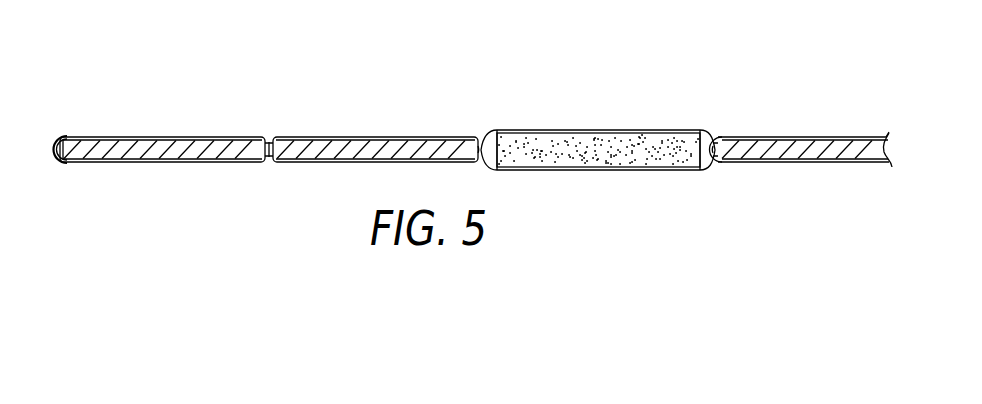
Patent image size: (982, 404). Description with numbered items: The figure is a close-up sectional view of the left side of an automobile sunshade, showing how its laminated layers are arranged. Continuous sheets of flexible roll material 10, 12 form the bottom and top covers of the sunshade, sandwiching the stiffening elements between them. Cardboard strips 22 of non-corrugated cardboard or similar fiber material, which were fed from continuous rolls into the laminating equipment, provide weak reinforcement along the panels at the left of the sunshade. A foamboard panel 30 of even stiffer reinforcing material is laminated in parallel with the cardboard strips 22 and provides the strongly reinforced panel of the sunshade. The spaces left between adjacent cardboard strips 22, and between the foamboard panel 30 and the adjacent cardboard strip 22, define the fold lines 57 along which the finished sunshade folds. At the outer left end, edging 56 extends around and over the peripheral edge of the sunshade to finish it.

The continuous sheet of flexible roll material 10 is at (456, 128).
The continuous sheet of flexible roll material 12 is at (437, 137).
The cardboard strip 22 is at (269, 96).
The foamboard panel 30 is at (627, 137).
The edging 56 is at (52, 147).
The fold line 57 is at (268, 137).